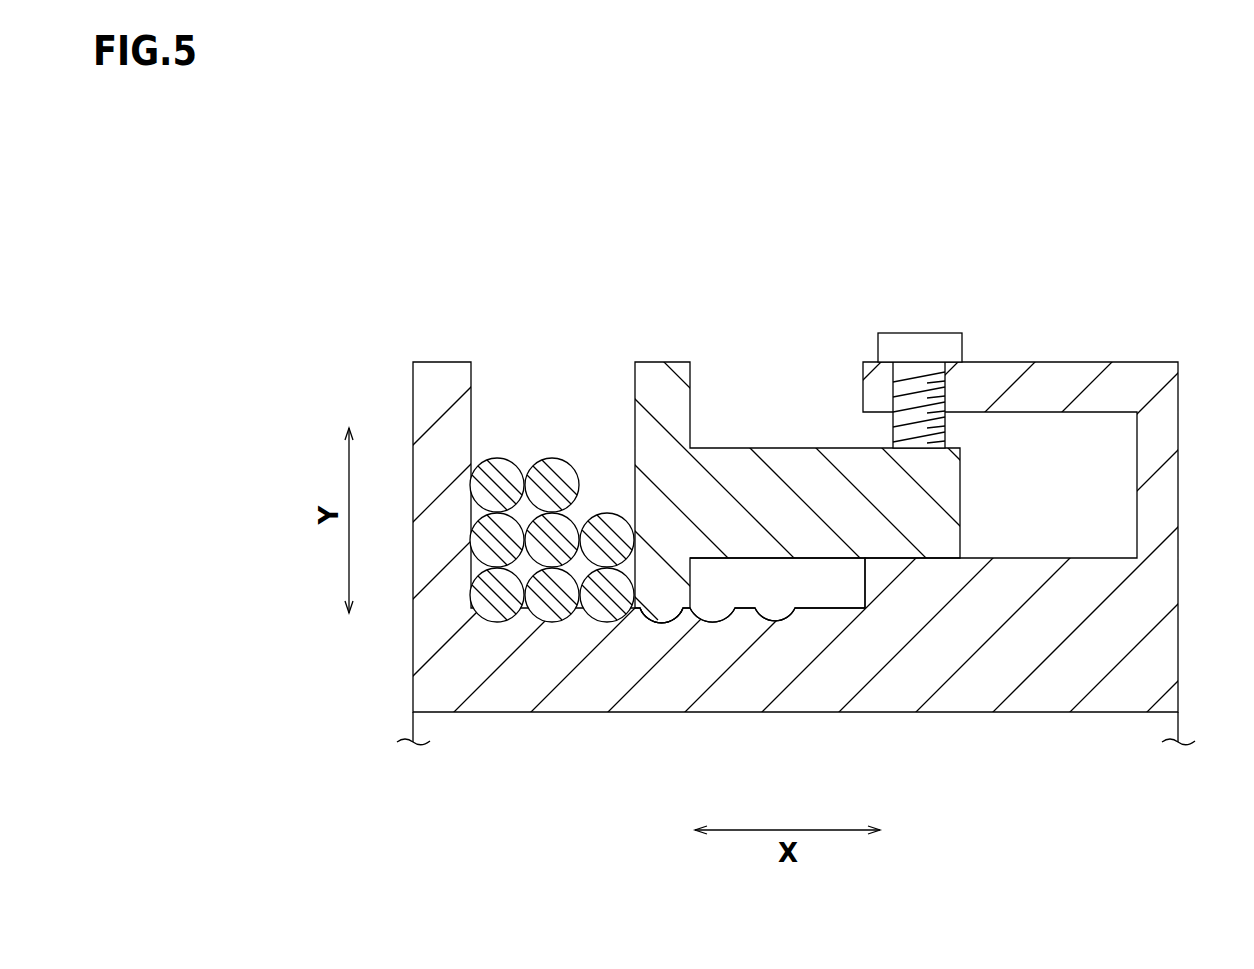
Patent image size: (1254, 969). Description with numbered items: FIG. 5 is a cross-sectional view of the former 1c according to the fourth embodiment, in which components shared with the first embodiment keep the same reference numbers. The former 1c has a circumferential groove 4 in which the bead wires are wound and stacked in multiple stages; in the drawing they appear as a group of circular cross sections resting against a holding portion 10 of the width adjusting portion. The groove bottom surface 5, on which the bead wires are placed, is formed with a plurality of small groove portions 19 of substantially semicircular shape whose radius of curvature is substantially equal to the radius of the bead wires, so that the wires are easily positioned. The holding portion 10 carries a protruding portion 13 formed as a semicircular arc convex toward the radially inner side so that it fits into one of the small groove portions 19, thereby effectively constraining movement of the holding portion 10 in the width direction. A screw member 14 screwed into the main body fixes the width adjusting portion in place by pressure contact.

The former 1c is at (1130, 316).
The circumferential groove 4 is at (527, 398).
The groove bottom surface 5 is at (781, 680).
The small groove portion 19 is at (762, 612).
The holding portion 10 is at (657, 391).
The protruding portion 13 is at (662, 606).
The screw member 14 is at (917, 333).